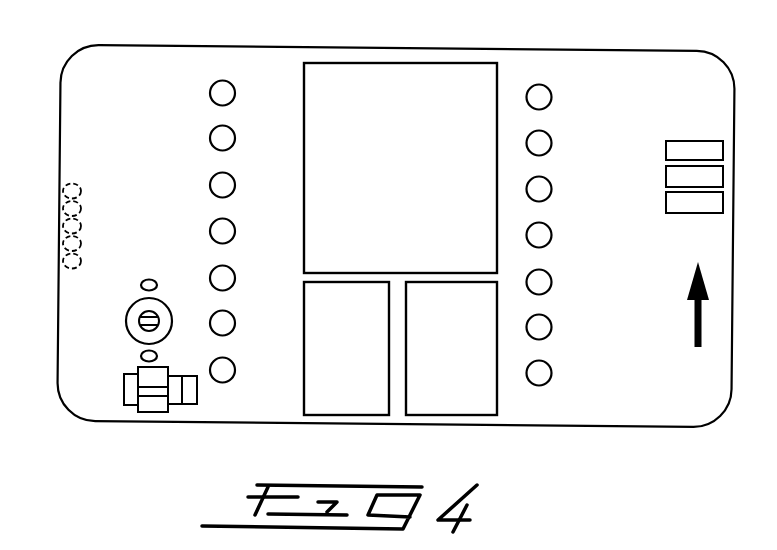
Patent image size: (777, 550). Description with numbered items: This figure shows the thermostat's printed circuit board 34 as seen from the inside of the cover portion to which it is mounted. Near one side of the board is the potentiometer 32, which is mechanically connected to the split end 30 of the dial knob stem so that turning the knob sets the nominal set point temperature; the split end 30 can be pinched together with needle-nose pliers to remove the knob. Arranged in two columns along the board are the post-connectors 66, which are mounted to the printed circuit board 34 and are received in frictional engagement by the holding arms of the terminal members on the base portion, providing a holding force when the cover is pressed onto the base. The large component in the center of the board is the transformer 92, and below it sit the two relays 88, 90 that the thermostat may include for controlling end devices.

The split end 30 is at (137, 319).
The potentiometer 32 is at (128, 326).
The printed circuit board 34 is at (647, 417).
The post-connector 66 is at (235, 92).
The relay 88 is at (339, 407).
The relay 90 is at (451, 407).
The transformer 92 is at (362, 73).